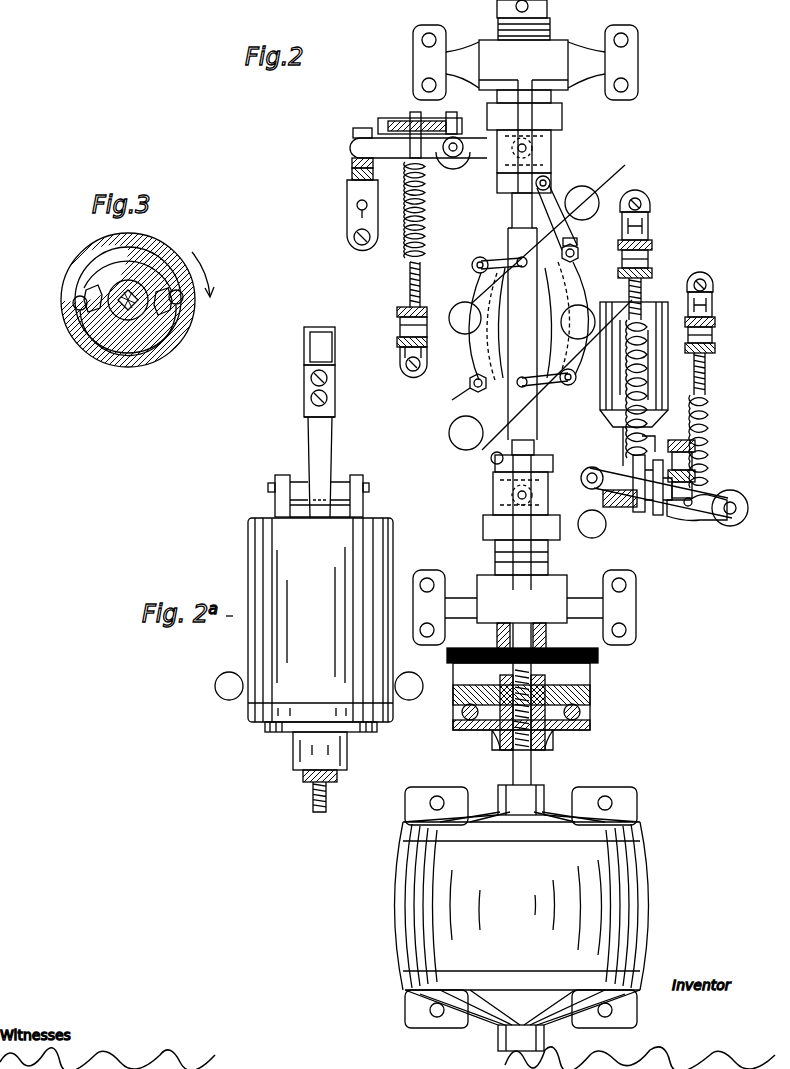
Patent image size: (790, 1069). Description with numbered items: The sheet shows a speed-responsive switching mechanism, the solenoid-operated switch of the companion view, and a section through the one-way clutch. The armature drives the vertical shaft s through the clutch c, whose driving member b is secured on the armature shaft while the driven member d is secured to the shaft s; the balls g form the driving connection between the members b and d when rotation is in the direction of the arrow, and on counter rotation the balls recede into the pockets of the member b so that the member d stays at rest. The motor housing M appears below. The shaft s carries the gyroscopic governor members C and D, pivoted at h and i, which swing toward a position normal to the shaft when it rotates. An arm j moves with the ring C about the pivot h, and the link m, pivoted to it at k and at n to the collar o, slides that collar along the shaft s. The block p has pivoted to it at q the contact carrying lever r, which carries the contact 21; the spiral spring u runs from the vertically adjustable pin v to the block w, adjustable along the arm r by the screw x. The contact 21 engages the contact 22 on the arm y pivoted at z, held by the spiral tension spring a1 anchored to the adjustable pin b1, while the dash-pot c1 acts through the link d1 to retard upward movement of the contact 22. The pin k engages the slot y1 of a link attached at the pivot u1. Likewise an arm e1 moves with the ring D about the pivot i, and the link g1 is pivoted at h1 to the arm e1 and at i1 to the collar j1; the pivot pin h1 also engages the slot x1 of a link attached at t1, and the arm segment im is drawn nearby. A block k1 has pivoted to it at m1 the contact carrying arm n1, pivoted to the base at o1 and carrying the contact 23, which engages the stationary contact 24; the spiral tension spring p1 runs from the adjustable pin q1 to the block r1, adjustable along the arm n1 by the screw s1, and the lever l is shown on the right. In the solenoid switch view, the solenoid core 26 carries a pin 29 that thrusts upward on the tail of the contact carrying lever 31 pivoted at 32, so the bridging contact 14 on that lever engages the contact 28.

In FIG. 2, the block k1 is at (556, 112).
In FIG. 2, the pivot m1 is at (512, 152).
In FIG. 2, the collar j1 is at (497, 182).
In FIG. 2, the shaft s is at (512, 210).
In FIG. 2, the pivot i1 is at (548, 186).
In FIG. 2, the link g1 is at (551, 181).
In FIG. 2, the gyroscopic governor member D is at (591, 198).
In FIG. 2, the gyroscopic governor member C is at (449, 441).
In FIG. 2, the sector arm im is at (484, 336).
In FIG. 2, the slot y1 is at (568, 310).
In FIG. 2, the arm e1 is at (485, 262).
In FIG. 2, the pivot i is at (518, 259).
In FIG. 2, the pivot u1 is at (472, 268).
In FIG. 2, the pivot pin h1 is at (580, 254).
In FIG. 2, the slot x1 is at (578, 249).
In FIG. 2, the pivot h is at (530, 386).
In FIG. 2, the pivot t1 is at (575, 374).
In FIG. 2, the arm j is at (470, 380).
In FIG. 2, the pivot k is at (462, 387).
In FIG. 2, the collar o is at (553, 466).
In FIG. 2, the link m is at (491, 458).
In FIG. 2, the block p is at (493, 496).
In FIG. 2, the pivot n is at (493, 481).
In FIG. 2, the pivot q is at (512, 495).
In FIG. 2, the driving member b is at (453, 712).
In FIG. 3, the driving member b is at (170, 256).
In FIG. 2, the driven member d is at (590, 696).
In FIG. 3, the driven member d is at (178, 352).
In FIG. 2, the balls g is at (473, 722).
In FIG. 3, the balls g is at (73, 310).
In FIG. 2, the motor M is at (400, 879).
In FIG. 2, the contact carrying arm n1 is at (406, 158).
In FIG. 2, the screw s1 is at (392, 119).
In FIG. 2, the block r1 is at (414, 121).
In FIG. 2, the pivot o1 is at (455, 136).
In FIG. 2, the contact 23 is at (352, 163).
In FIG. 2, the stationary contact 24 is at (352, 175).
In FIG. 2, the spiral tension spring p1 is at (405, 236).
In FIG. 2, the vertically adjustable pin q1 is at (410, 286).
In FIG. 2, the vertically adjustable pin v is at (628, 292).
In FIG. 2, the dash-pot c1 is at (650, 302).
In FIG. 2, the link d1 is at (623, 432).
In FIG. 2, the vertically adjustable pin b1 is at (706, 380).
In FIG. 2, the lever l is at (620, 467).
In FIG. 2, the pivot z is at (748, 508).
In FIG. 2, the contact carrying lever r is at (580, 521).
In FIG. 2, the screw x is at (621, 507).
In FIG. 2, the block w is at (640, 512).
In FIG. 2, the arm y is at (658, 516).
In FIG. 2, the spiral tension spring a1 is at (695, 448).
In FIG. 2, the contact 21 is at (696, 487).
In FIG. 2, the contact 22 is at (702, 519).
In FIG. 2, the spiral spring u is at (646, 447).
In FIG. 2A, the bridging contact 14 is at (325, 348).
In FIG. 2A, the contact 28 is at (304, 348).
In FIG. 2A, the contact carrying lever 31 is at (309, 437).
In FIG. 2A, the pin 29 is at (330, 508).
In FIG. 2A, the pivot 32 is at (268, 487).
In FIG. 2A, the solenoid core 26 is at (293, 752).
In FIG. 3, the clutch c is at (128, 309).